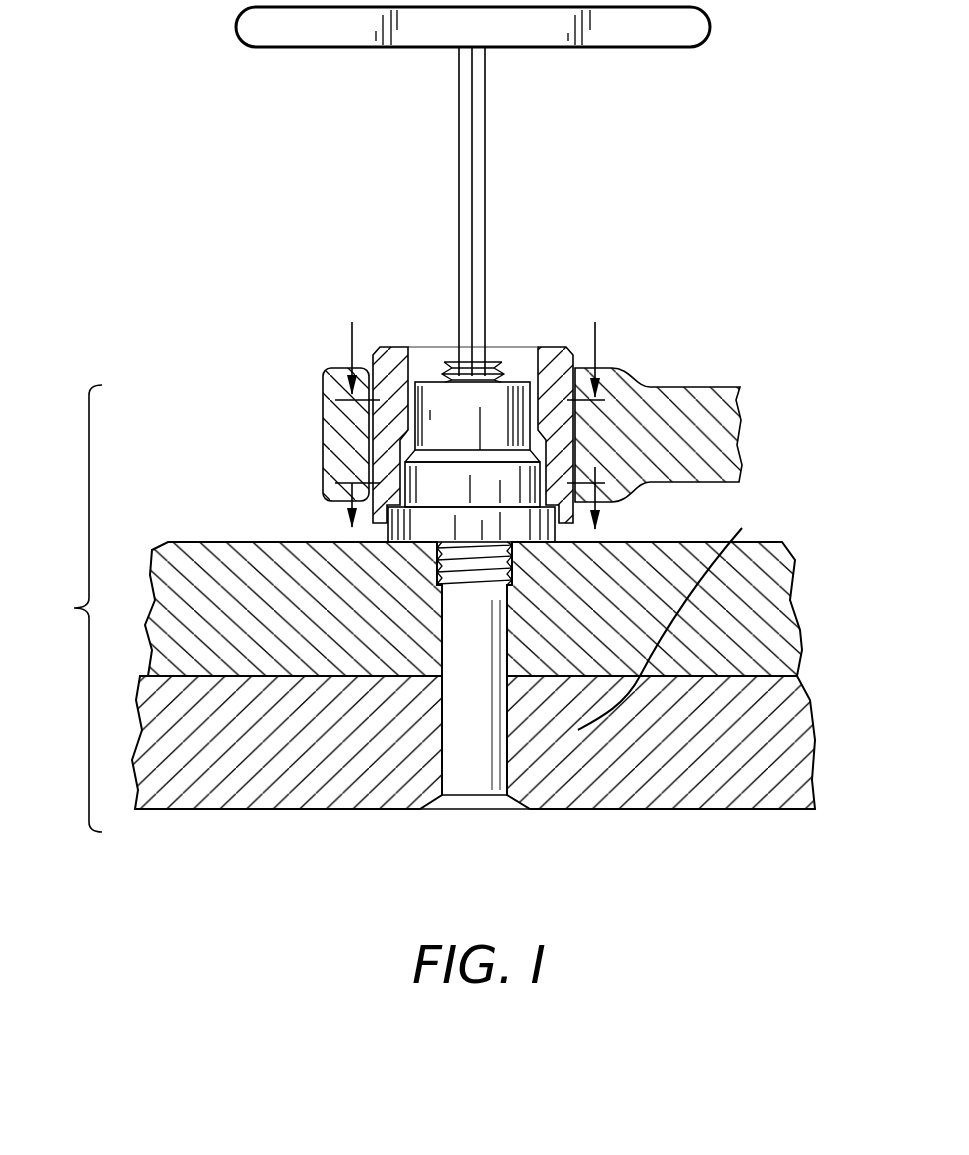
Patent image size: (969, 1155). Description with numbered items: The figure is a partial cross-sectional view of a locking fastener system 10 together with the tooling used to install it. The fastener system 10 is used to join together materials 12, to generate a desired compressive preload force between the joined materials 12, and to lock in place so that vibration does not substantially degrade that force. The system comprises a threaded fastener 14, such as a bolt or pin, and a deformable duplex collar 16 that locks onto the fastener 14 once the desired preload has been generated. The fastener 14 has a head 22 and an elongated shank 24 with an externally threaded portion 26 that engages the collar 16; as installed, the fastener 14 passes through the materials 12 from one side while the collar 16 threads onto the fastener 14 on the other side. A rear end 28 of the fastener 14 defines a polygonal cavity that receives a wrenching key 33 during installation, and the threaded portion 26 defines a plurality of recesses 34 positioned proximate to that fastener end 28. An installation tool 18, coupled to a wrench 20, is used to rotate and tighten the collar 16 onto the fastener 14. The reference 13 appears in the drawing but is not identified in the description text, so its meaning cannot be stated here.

The locking fastener system 10 is at (67, 608).
The materials 12 is at (770, 586).
The gap distance 13 is at (473, 506).
The threaded fastener 14 is at (573, 840).
The deformable duplex collar 16 is at (520, 381).
The installation tool 18 is at (357, 418).
The wrench 20 is at (676, 398).
The head 22 is at (448, 803).
The elongated shank 24 is at (453, 757).
The externally threaded portion 26 is at (475, 570).
The rear end 28 is at (452, 357).
The wrenching key 33 is at (480, 133).
The recesses 34 is at (478, 360).